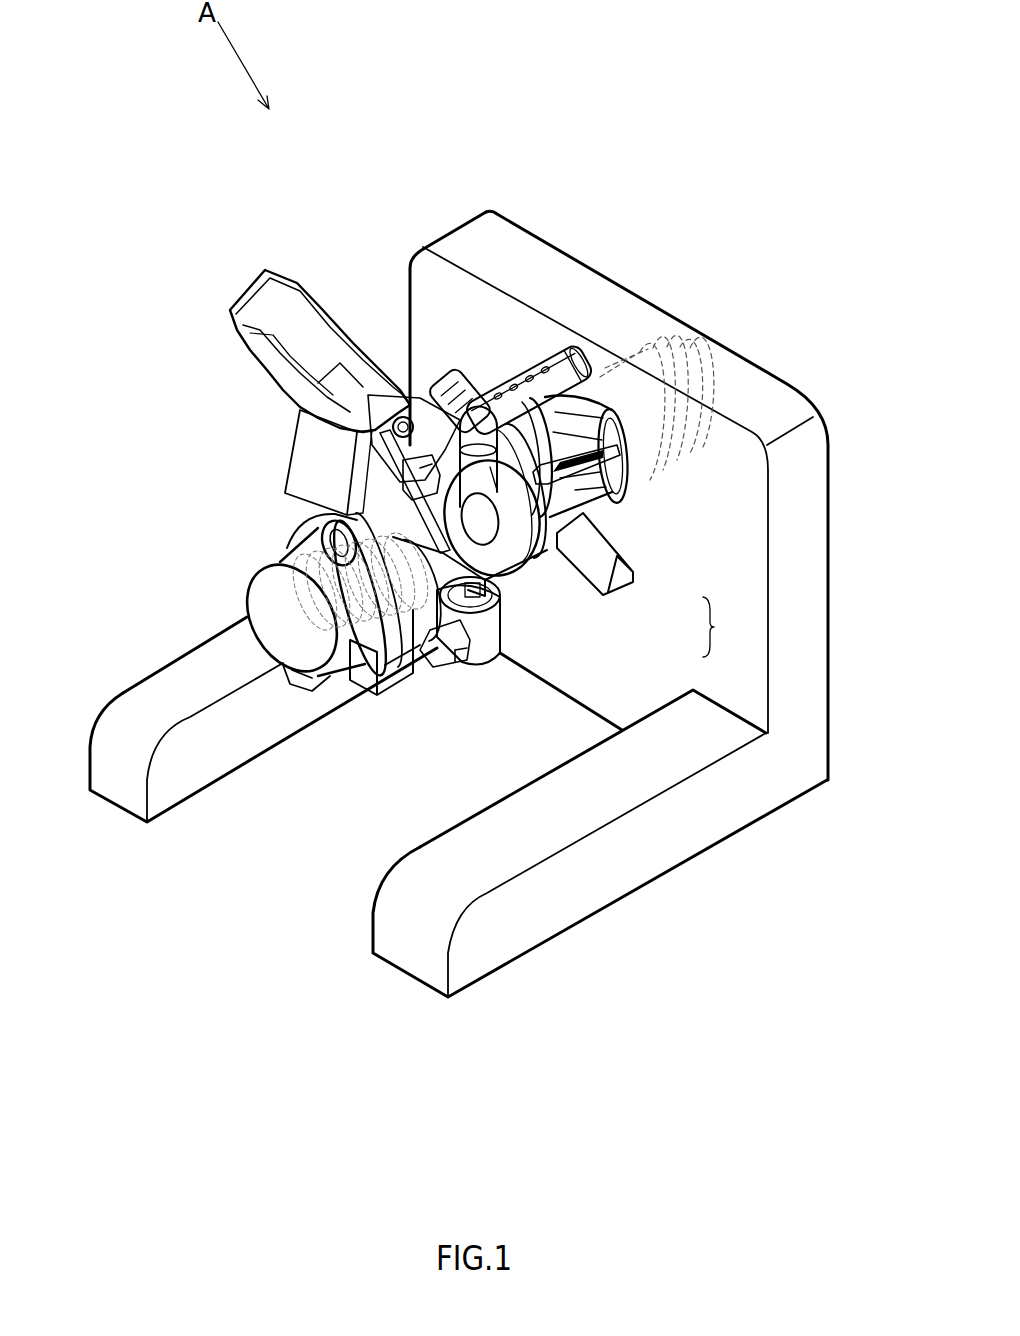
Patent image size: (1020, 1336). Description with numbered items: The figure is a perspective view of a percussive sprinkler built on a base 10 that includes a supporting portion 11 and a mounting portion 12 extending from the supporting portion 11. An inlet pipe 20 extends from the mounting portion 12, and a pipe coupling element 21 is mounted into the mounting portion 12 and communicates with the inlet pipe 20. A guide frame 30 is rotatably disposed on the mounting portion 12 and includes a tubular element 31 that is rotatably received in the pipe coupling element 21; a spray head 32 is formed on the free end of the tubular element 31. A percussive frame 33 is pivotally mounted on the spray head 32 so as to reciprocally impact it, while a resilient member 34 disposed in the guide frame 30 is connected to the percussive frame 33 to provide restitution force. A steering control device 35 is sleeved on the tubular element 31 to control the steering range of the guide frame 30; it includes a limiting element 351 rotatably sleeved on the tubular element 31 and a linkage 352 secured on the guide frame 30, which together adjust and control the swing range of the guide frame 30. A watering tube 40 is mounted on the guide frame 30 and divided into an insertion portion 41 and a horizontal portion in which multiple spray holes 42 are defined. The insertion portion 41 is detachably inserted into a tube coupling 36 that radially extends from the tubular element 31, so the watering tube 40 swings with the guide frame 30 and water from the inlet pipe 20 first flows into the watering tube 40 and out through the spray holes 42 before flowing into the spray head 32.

The base 10 is at (651, 917).
The supporting portion 11 is at (717, 847).
The mounting portion 12 is at (553, 250).
The inlet pipe 20 is at (688, 362).
The pipe coupling element 21 is at (607, 500).
The guide frame 30 is at (226, 431).
The tubular element 31 is at (503, 600).
The spray head 32 is at (473, 617).
The percussive frame 33 is at (245, 290).
The resilient member 34 is at (402, 615).
The steering control device 35 is at (724, 627).
The limiting element 351 is at (617, 590).
The linkage 352 is at (540, 560).
The tube coupling 36 is at (470, 537).
The watering tube 40 is at (372, 205).
The insertion portion 41 is at (433, 387).
The spray holes 42 is at (518, 410).